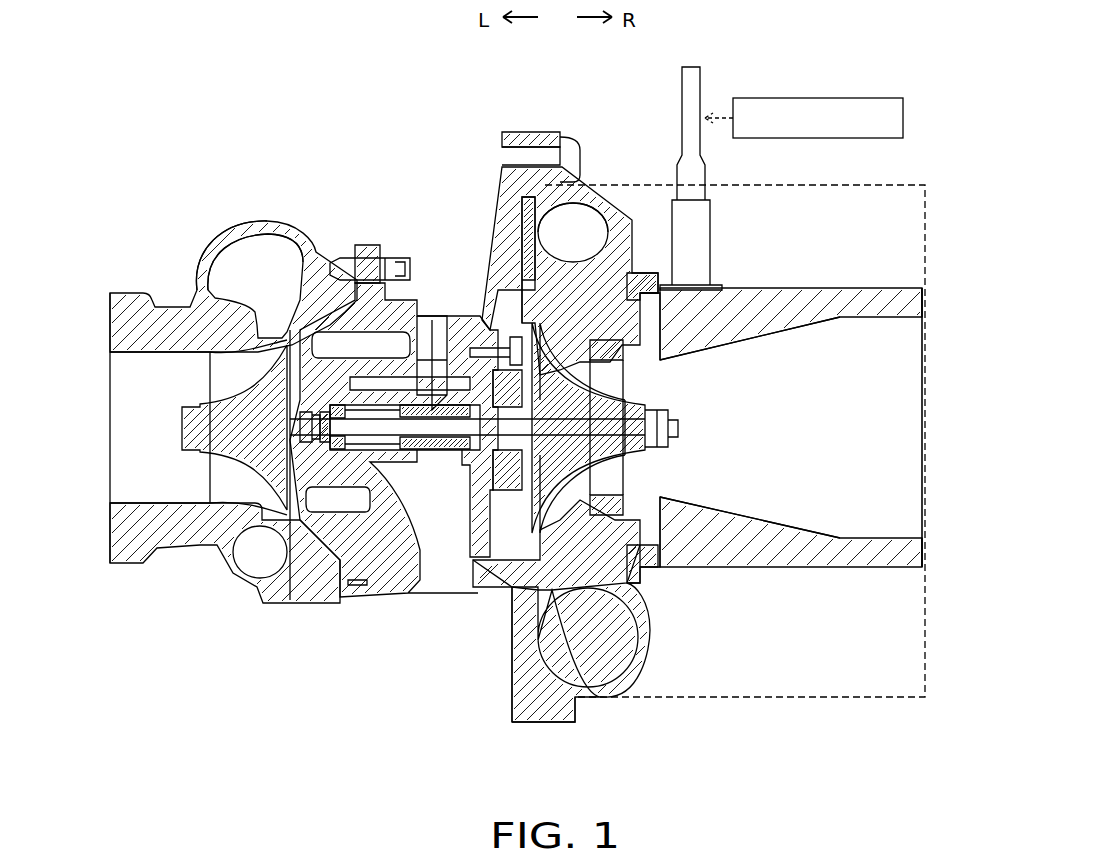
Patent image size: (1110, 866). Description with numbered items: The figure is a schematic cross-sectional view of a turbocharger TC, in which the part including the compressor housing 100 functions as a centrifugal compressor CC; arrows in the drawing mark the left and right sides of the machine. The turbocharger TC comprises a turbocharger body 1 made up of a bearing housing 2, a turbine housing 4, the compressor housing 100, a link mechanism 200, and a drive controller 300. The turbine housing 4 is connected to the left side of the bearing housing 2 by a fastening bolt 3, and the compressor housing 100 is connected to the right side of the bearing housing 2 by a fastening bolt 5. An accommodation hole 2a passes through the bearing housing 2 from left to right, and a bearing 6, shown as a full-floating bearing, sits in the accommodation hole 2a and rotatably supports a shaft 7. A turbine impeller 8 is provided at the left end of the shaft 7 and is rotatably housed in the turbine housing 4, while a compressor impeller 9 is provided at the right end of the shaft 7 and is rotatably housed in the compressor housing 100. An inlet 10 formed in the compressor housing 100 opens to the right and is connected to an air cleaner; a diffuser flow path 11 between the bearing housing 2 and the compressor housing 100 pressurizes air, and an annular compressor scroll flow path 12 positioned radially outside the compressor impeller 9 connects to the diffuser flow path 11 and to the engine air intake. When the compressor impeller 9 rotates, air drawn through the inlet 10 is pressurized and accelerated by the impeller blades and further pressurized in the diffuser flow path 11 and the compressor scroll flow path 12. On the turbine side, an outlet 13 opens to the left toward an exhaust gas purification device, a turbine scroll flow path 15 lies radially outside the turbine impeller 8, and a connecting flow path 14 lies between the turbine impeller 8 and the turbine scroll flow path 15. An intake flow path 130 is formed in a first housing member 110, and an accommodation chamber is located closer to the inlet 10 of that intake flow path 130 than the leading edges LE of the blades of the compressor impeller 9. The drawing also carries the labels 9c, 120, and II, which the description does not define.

The turbocharger body 1 is at (178, 200).
The bearing housing 2 is at (468, 315).
The accommodation hole 2a is at (432, 400).
The fastening bolt 3 is at (390, 262).
The turbine housing 4 is at (290, 226).
The fastening bolt 5 is at (572, 138).
The bearing 6 is at (418, 437).
The shaft 7 is at (450, 450).
The turbine impeller 8 is at (235, 455).
The compressor impeller 9 is at (628, 448).
The turbine blade 9c is at (530, 530).
The inlet 10 is at (925, 398).
The diffuser flow path 11 is at (538, 280).
The compressor scroll flow path 12 is at (573, 208).
The outlet 13 is at (110, 394).
The connecting flow path 14 is at (200, 300).
The turbine scroll flow path 15 is at (237, 253).
The compressor housing 100 is at (852, 224).
The first housing member 110 is at (910, 288).
The turbine housing flange 120 is at (545, 722).
The intake flow path 130 is at (782, 444).
The link mechanism 200 is at (764, 224).
The drive controller 300 is at (888, 98).
The turbocharger TC is at (127, 121).
The centrifugal compressor CC is at (822, 50).
The leading edges LE is at (623, 457).
The region II is at (880, 697).